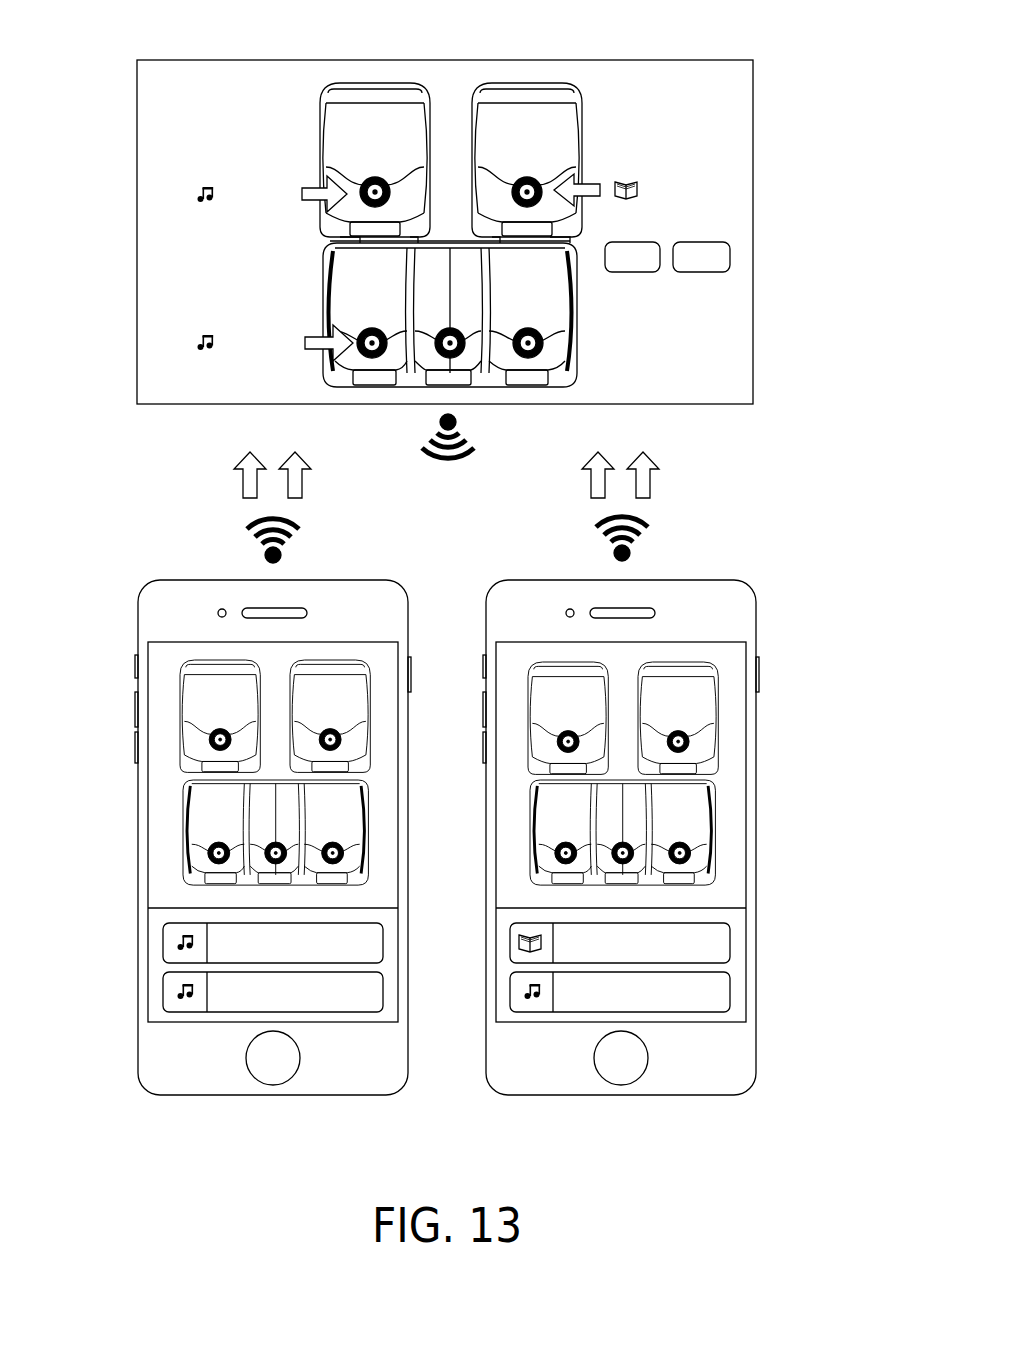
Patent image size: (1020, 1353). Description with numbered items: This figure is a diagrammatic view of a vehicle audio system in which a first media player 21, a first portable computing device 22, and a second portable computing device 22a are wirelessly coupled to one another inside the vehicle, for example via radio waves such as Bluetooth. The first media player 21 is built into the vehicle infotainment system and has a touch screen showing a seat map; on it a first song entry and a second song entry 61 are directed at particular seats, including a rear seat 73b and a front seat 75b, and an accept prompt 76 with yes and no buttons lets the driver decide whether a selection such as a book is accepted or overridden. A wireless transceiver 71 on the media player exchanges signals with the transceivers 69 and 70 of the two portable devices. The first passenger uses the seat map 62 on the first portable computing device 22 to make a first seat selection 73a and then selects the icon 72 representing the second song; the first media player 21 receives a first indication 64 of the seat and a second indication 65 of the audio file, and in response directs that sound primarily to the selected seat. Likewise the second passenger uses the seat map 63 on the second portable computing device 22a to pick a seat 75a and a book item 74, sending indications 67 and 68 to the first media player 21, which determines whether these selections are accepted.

The first media player 21 is at (445, 232).
The song 2 request indicator 61 is at (187, 338).
The rear left seat on vehicle display 73b is at (313, 320).
The front right seat on vehicle display 75b is at (562, 133).
The accept prompt with yes/no buttons 76 is at (736, 262).
The vehicle wireless transceiver 71 is at (423, 428).
The first indication 64 is at (243, 482).
The second indication 65 is at (302, 482).
The transmission arrow 67 is at (591, 482).
The transmission arrow 68 is at (650, 482).
The first mobile device wireless transceiver 69 is at (238, 535).
The second mobile device wireless transceiver 70 is at (588, 528).
The first portable computing device 22 is at (239, 837).
The second portable computing device 22a is at (622, 824).
The seat map on first mobile device 62 is at (223, 764).
The seat map on second mobile device 63 is at (621, 754).
The first seat selection 73a is at (198, 857).
The front right seat on second mobile device 75a is at (703, 741).
The icon 72 is at (163, 992).
The book 1 list item 74 is at (730, 940).